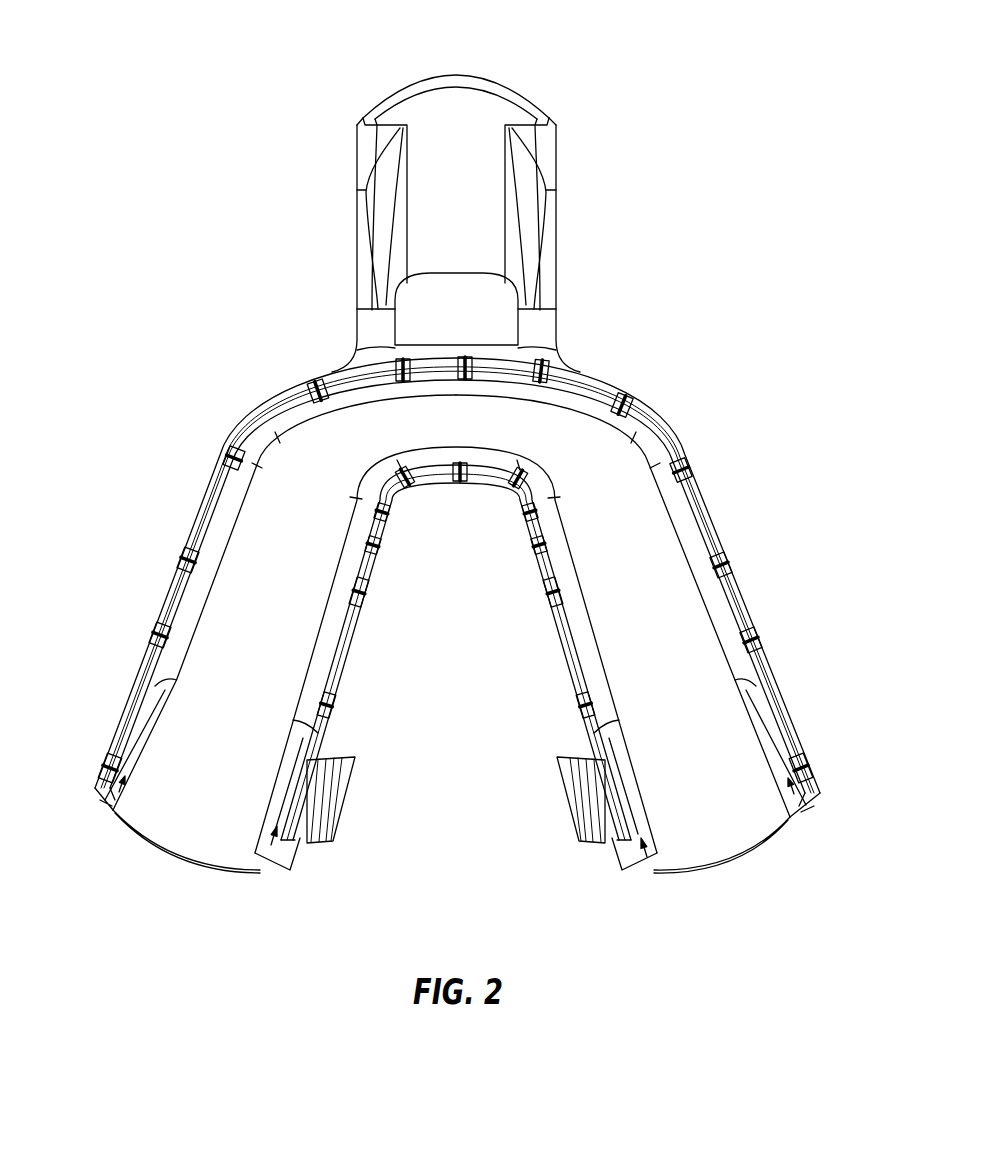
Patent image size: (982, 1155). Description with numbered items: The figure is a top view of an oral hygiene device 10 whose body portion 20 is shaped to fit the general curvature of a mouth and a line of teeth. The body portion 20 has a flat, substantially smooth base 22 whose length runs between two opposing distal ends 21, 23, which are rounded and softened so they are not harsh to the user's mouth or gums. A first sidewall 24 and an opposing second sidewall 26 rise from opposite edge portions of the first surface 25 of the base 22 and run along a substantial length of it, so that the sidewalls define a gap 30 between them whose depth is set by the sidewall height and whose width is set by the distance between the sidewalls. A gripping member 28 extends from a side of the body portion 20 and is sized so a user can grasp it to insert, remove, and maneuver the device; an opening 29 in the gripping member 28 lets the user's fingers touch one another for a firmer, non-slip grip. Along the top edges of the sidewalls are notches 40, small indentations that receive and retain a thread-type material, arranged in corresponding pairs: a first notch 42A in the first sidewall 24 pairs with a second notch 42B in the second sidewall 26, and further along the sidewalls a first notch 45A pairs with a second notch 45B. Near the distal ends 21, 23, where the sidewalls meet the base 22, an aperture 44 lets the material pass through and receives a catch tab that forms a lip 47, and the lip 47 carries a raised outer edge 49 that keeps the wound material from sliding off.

The oral hygiene device 10 is at (108, 222).
The body portion 20 is at (750, 568).
The distal end 21 is at (186, 872).
The base 22 is at (680, 666).
The distal end 23 is at (735, 870).
The first sidewall 24 is at (205, 510).
The first surface 25 is at (290, 569).
The second sidewall 26 is at (432, 490).
The gripping member 28 is at (452, 96).
The opening 29 is at (468, 316).
The gap 30 is at (594, 492).
The notches 40 is at (232, 450).
The first notch of first notch pair 42A is at (156, 641).
The second notch of first notch pair 42B is at (332, 708).
The aperture 44 is at (118, 808).
The first notch of second notch pair 45A is at (195, 562).
The second notch of second notch pair 45B is at (360, 604).
The lip 47 is at (318, 846).
The raised outer edge 49 is at (352, 790).